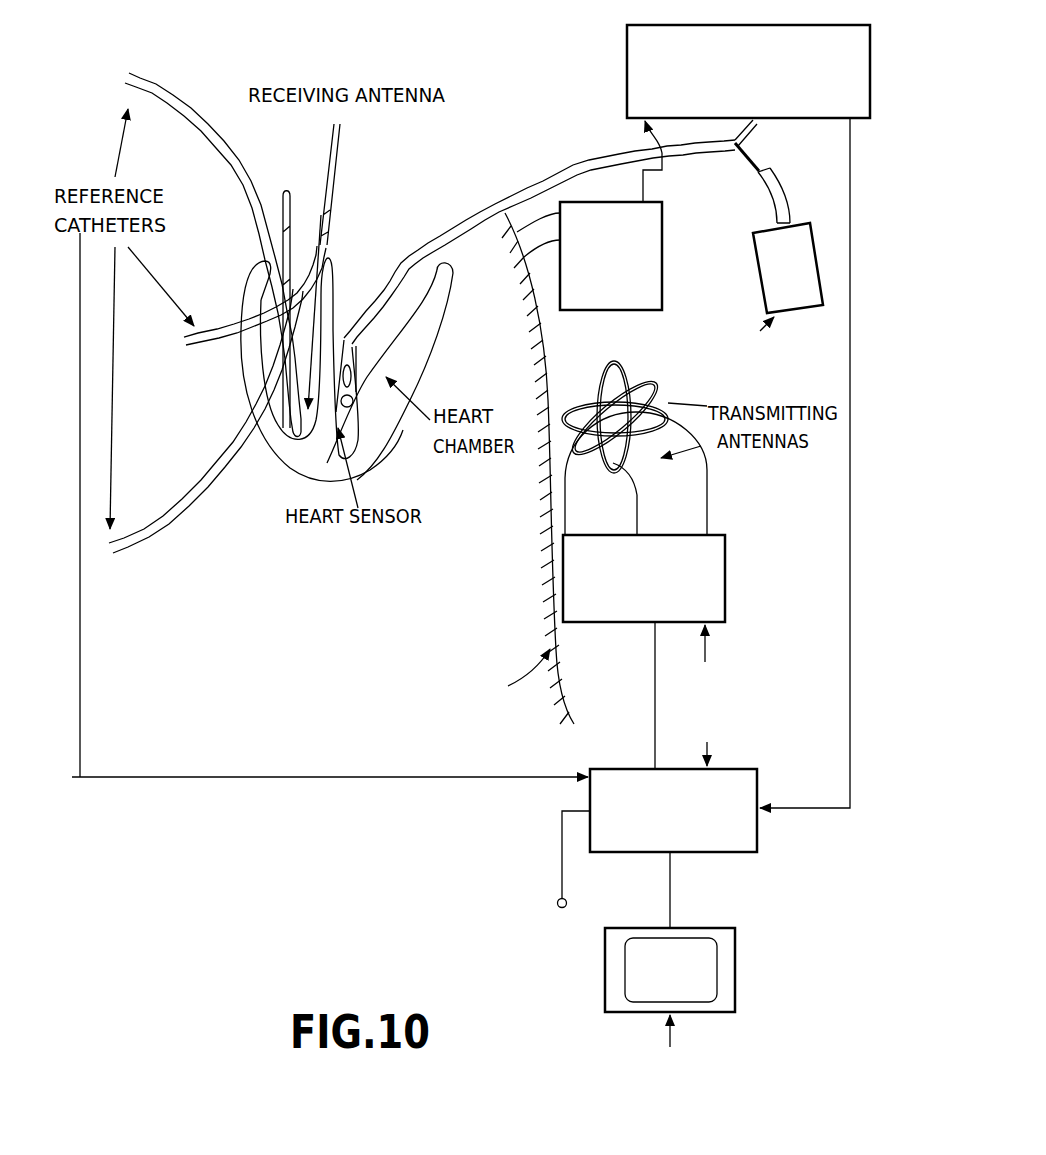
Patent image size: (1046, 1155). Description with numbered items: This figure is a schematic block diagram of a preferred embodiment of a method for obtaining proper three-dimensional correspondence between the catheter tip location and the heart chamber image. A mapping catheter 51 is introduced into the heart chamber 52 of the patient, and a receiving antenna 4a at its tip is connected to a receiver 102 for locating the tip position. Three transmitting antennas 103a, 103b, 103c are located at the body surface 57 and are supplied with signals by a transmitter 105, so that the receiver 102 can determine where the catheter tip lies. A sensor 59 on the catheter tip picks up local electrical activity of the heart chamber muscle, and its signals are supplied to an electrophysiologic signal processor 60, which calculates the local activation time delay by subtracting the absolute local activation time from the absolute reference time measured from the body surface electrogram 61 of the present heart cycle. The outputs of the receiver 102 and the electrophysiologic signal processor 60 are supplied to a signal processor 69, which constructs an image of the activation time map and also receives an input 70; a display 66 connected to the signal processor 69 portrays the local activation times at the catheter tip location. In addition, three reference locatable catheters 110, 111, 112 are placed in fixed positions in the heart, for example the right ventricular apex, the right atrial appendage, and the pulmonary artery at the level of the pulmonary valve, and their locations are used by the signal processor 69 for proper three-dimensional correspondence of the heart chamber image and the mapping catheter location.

The reference locatable catheter 110 is at (126, 80).
The reference locatable catheter 111 is at (112, 543).
The reference locatable catheter 112 is at (185, 340).
The receiving antenna 4a is at (343, 338).
The catheter 51 is at (490, 193).
The heart chamber 52 is at (430, 349).
The sensor 59 is at (351, 407).
The electrophysiologic signal processor 60 is at (627, 73).
The body surface electrogram 61 is at (662, 232).
The receiver 102 is at (756, 272).
The transmitting antenna 103a is at (645, 367).
The transmitting antenna 103b is at (650, 372).
The transmitting antenna 103c is at (701, 445).
The transmitter 105 is at (727, 597).
The body surface 57 is at (560, 680).
The signal processor 69 is at (758, 798).
The input terminal 70 is at (572, 805).
The display 66 is at (737, 970).